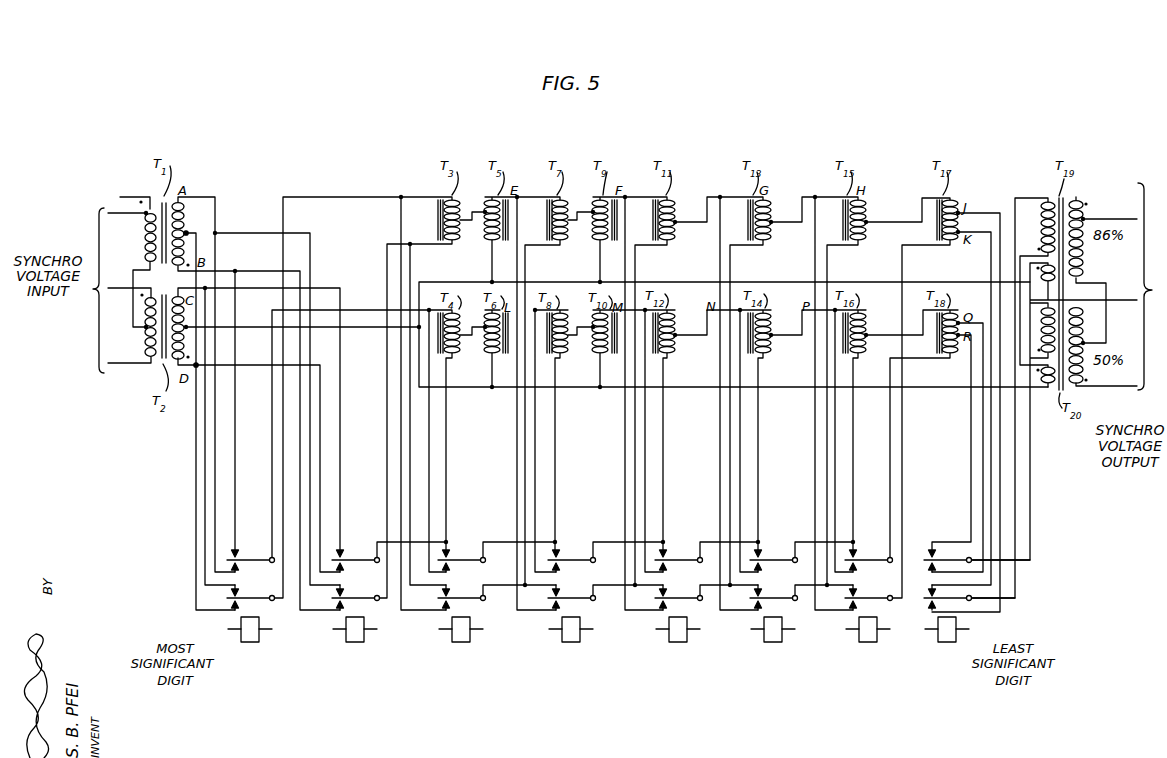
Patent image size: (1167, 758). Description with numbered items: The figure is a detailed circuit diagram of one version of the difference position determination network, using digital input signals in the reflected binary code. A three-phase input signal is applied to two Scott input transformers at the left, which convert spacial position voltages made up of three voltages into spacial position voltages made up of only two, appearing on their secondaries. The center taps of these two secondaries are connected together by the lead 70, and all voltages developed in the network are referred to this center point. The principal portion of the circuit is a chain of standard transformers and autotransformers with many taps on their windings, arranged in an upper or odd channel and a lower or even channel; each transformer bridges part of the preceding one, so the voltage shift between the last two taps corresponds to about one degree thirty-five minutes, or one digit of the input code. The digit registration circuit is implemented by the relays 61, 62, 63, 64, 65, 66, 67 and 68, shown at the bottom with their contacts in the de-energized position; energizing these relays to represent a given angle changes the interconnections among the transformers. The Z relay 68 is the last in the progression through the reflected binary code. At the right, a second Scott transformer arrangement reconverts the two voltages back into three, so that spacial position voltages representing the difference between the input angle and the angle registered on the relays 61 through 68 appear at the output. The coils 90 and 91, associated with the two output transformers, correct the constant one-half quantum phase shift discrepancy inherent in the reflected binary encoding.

The relay 61 is at (252, 642).
The relay 62 is at (348, 641).
The relay 63 is at (454, 641).
The relay 64 is at (564, 641).
The relay 65 is at (671, 641).
The relay 66 is at (766, 641).
The relay 67 is at (861, 641).
The Z relay 68 is at (940, 641).
The lead 70 is at (199, 236).
The coil 90 is at (1048, 283).
The coil 91 is at (1042, 389).